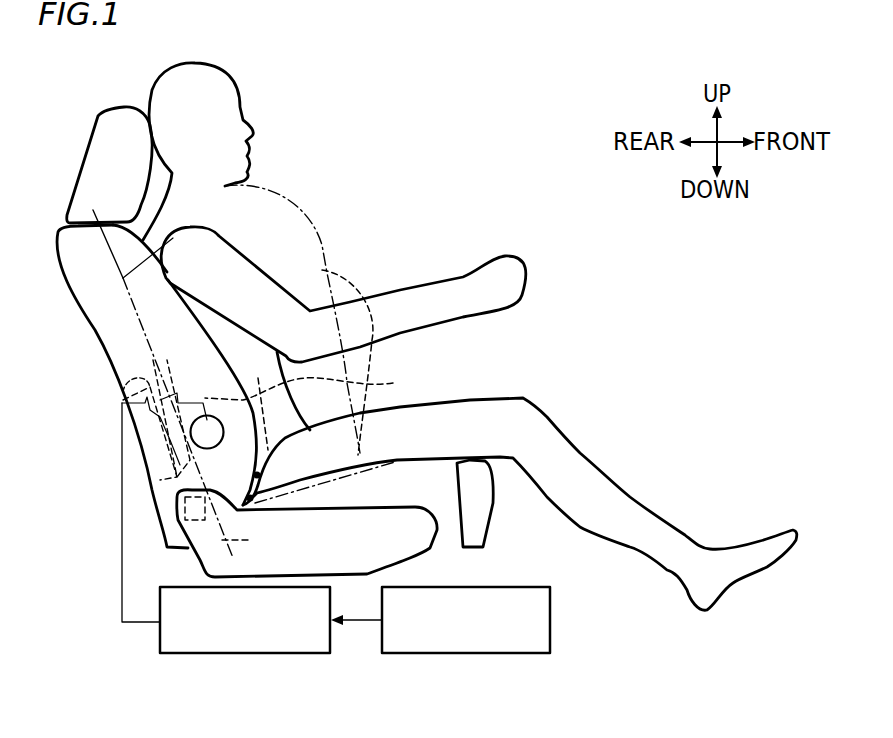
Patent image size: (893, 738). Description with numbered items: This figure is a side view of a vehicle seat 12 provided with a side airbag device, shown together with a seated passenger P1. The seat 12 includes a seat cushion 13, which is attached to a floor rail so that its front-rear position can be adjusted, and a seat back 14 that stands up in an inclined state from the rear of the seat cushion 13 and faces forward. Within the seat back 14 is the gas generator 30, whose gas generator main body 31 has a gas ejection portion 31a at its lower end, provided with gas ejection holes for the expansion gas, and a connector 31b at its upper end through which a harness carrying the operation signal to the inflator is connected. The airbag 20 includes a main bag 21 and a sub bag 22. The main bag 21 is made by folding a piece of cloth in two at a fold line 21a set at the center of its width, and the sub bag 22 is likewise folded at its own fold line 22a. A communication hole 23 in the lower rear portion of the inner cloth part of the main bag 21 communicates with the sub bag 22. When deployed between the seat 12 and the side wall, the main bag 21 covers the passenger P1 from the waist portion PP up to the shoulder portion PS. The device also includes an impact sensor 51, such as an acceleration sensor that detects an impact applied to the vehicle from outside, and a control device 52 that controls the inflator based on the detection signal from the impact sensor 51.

The vehicle seat 12 is at (295, 361).
The seat cushion 13 is at (496, 515).
The seat back 14 is at (103, 327).
The airbag 20 is at (258, 420).
The main bag 21 is at (304, 420).
The fold line 21a is at (237, 541).
The sub bag 22 is at (235, 429).
The fold line 22a is at (165, 460).
The communication hole 23 is at (205, 414).
The gas generator 30 is at (99, 500).
The gas generator main body 31 is at (99, 500).
The gas ejection portion 31a is at (143, 497).
The connector 31b is at (142, 393).
The impact sensor 51 is at (550, 620).
The control device 52 is at (247, 653).
The passenger P1 is at (247, 95).
The shoulder portion PS is at (172, 258).
The waist portion PP is at (262, 471).